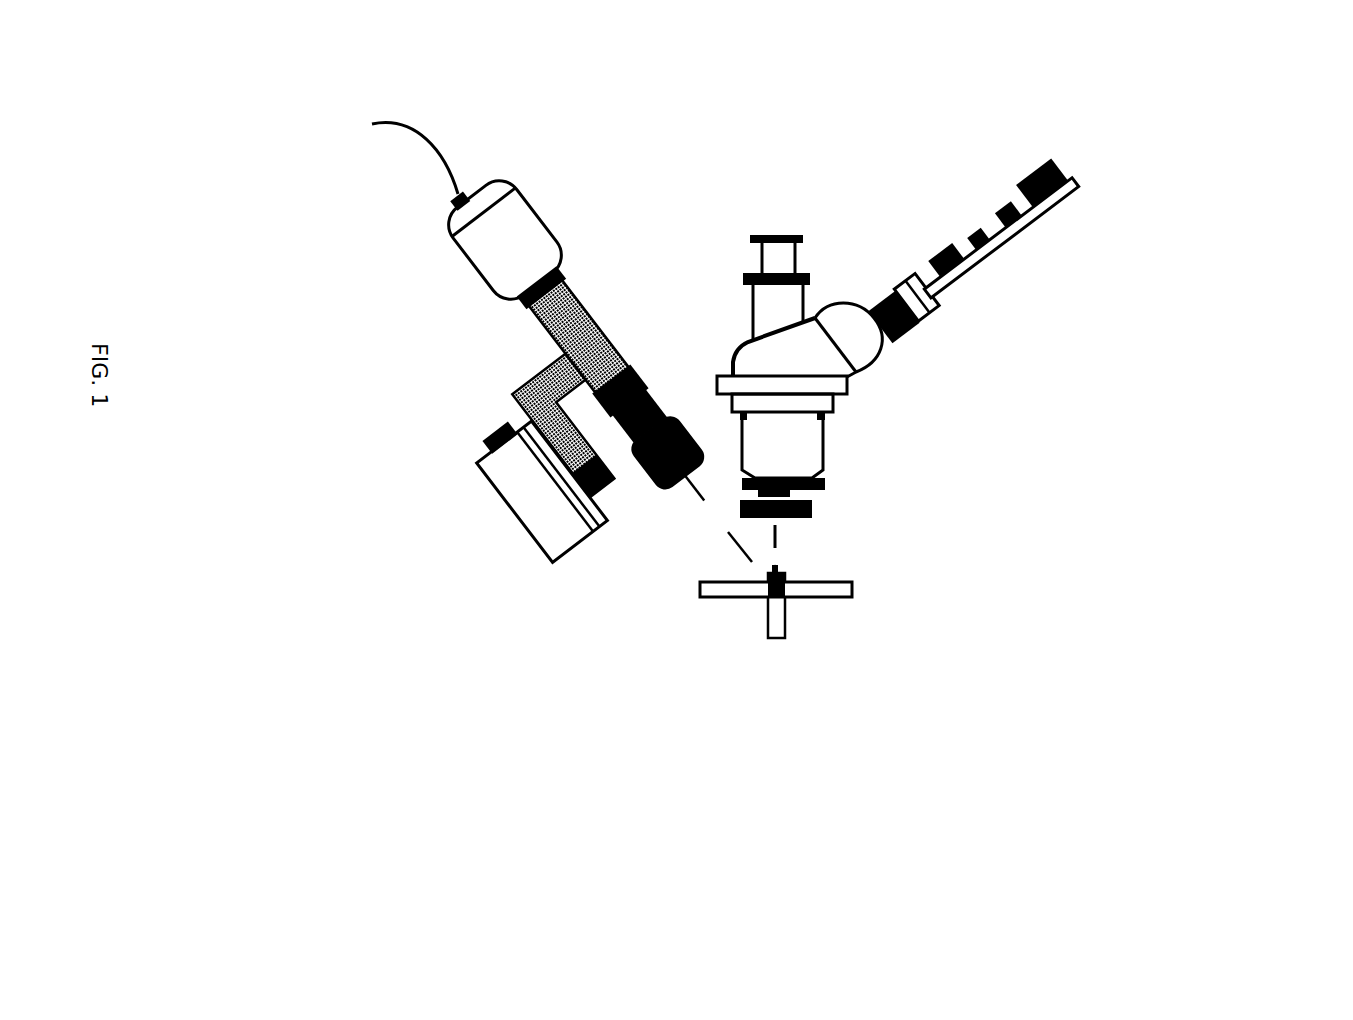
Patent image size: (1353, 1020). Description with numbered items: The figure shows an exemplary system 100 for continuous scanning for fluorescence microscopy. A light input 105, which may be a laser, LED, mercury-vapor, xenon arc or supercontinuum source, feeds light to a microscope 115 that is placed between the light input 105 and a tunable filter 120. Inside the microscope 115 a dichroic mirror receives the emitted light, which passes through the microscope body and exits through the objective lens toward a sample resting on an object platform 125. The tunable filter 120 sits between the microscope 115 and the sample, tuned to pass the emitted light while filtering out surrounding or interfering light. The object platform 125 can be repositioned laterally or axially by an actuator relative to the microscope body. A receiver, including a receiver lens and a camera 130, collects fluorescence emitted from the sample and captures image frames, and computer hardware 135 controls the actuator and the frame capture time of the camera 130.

The system 100 is at (172, 622).
The light input 105 is at (1068, 188).
The microscope 115 is at (745, 343).
The tunable filter 120 is at (812, 518).
The object platform 125 is at (858, 592).
The camera 130 is at (517, 264).
The computer hardware 135 is at (586, 109).